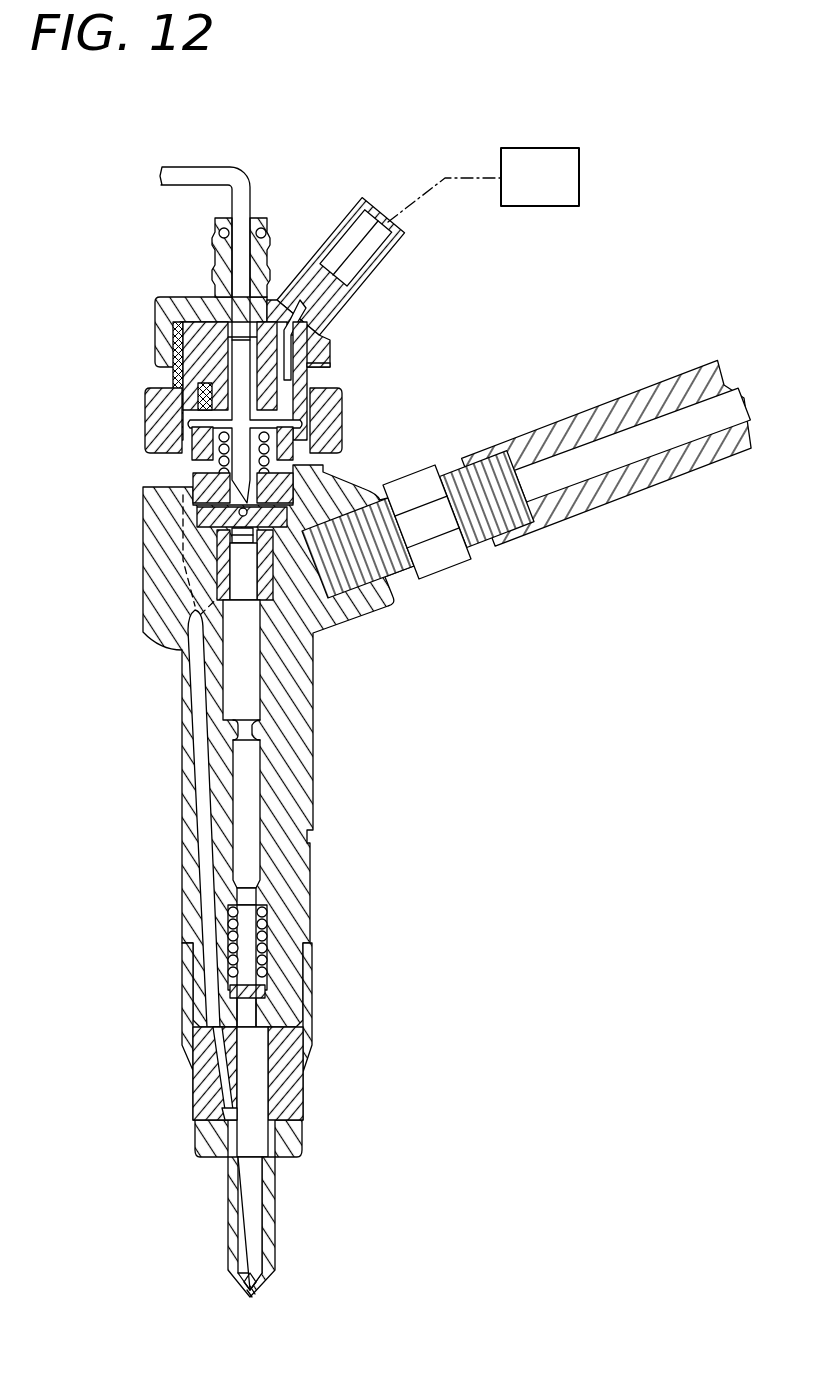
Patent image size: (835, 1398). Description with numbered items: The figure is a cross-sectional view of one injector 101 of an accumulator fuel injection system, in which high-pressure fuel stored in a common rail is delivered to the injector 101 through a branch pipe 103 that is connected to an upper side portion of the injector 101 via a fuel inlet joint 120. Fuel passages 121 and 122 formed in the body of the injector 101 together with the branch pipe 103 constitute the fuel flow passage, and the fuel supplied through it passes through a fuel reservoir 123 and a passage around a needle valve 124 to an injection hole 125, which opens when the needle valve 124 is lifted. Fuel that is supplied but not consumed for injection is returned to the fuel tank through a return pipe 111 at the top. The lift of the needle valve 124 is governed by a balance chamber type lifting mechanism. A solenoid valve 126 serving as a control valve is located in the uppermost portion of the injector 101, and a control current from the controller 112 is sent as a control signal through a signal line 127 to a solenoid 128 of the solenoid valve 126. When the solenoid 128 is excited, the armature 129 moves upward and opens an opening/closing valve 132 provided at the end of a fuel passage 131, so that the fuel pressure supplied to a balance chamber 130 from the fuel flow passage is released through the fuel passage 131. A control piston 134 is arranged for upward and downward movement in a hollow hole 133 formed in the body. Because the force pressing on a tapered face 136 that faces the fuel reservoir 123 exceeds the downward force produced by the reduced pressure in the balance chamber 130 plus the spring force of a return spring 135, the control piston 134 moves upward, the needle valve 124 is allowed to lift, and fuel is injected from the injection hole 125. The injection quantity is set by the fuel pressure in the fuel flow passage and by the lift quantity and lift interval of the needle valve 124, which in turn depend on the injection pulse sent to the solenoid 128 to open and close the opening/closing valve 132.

The injector 101 is at (316, 702).
The branch pipe 103 is at (622, 400).
The return pipe 111 is at (192, 177).
The controller 112 is at (553, 160).
The fuel inlet joint 120 is at (398, 550).
The fuel passage 121 is at (198, 712).
The fuel passage 122 is at (220, 1070).
The fuel reservoir 123 is at (230, 1113).
The needle valve 124 is at (247, 1200).
The injection hole 125 is at (258, 1287).
The solenoid valve 126 is at (283, 378).
The signal line 127 is at (318, 285).
The solenoid 128 is at (190, 382).
The armature 129 is at (150, 420).
The balance chamber 130 is at (237, 533).
The fuel passage 131 is at (190, 520).
The opening/closing valve 132 is at (197, 478).
The hollow hole 133 is at (262, 732).
The control piston 134 is at (245, 688).
The return spring 135 is at (230, 938).
The tapered face 136 is at (273, 1107).